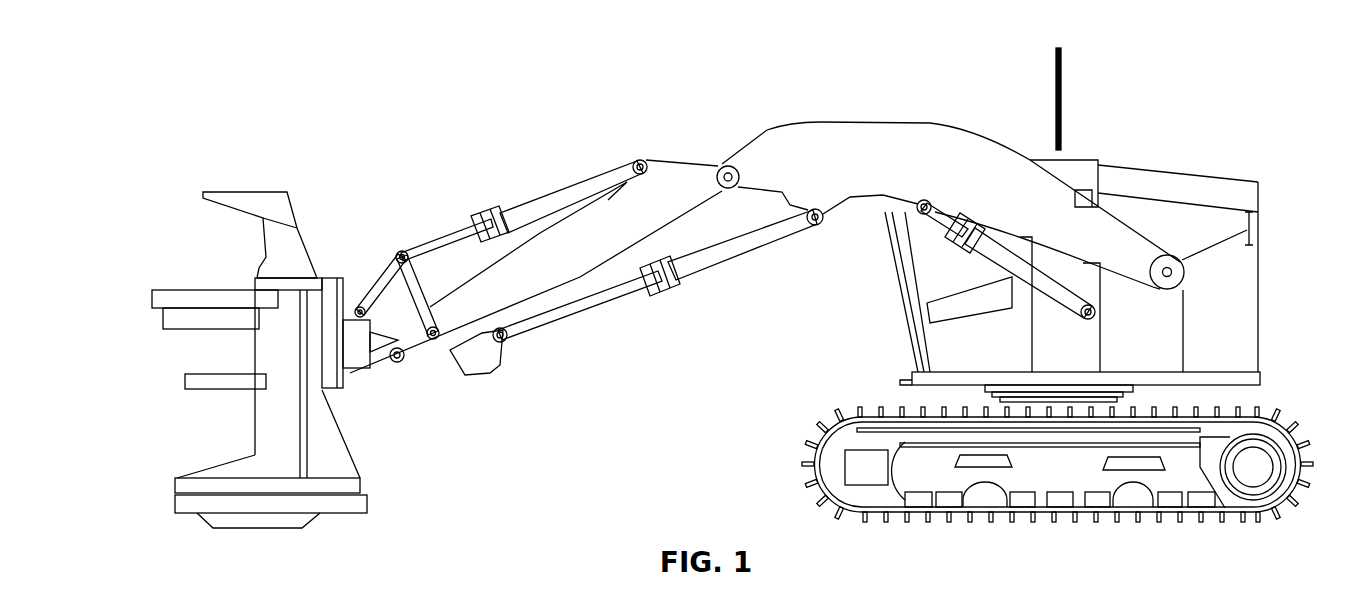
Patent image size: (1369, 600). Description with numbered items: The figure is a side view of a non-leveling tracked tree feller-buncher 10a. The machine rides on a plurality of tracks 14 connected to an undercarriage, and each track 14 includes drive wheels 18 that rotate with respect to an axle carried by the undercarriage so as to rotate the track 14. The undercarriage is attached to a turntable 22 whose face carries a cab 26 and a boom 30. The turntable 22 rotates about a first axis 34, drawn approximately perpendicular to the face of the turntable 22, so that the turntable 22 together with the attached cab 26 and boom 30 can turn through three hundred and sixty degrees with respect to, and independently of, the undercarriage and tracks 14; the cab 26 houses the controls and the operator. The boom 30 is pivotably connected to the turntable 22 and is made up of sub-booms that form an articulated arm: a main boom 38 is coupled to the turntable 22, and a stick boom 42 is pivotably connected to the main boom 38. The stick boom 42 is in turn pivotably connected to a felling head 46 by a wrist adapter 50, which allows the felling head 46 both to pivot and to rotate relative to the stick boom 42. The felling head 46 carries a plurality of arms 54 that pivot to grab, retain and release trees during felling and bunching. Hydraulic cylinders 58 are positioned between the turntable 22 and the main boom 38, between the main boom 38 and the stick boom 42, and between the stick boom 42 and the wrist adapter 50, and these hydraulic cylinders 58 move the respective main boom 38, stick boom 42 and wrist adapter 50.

The non-leveling tree feller-buncher 10a is at (452, 118).
The track 14 is at (1283, 422).
The drive wheel 18 is at (843, 418).
The turntable 22 is at (912, 378).
The cab 26 is at (905, 285).
The boom 30 is at (733, 116).
The first axis 34 is at (1060, 97).
The main boom 38 is at (881, 135).
The stick boom 42 is at (470, 323).
The felling head 46 is at (293, 212).
The wrist adapter 50 is at (355, 378).
The arm 54 is at (170, 330).
The hydraulic cylinder 58 is at (553, 187).